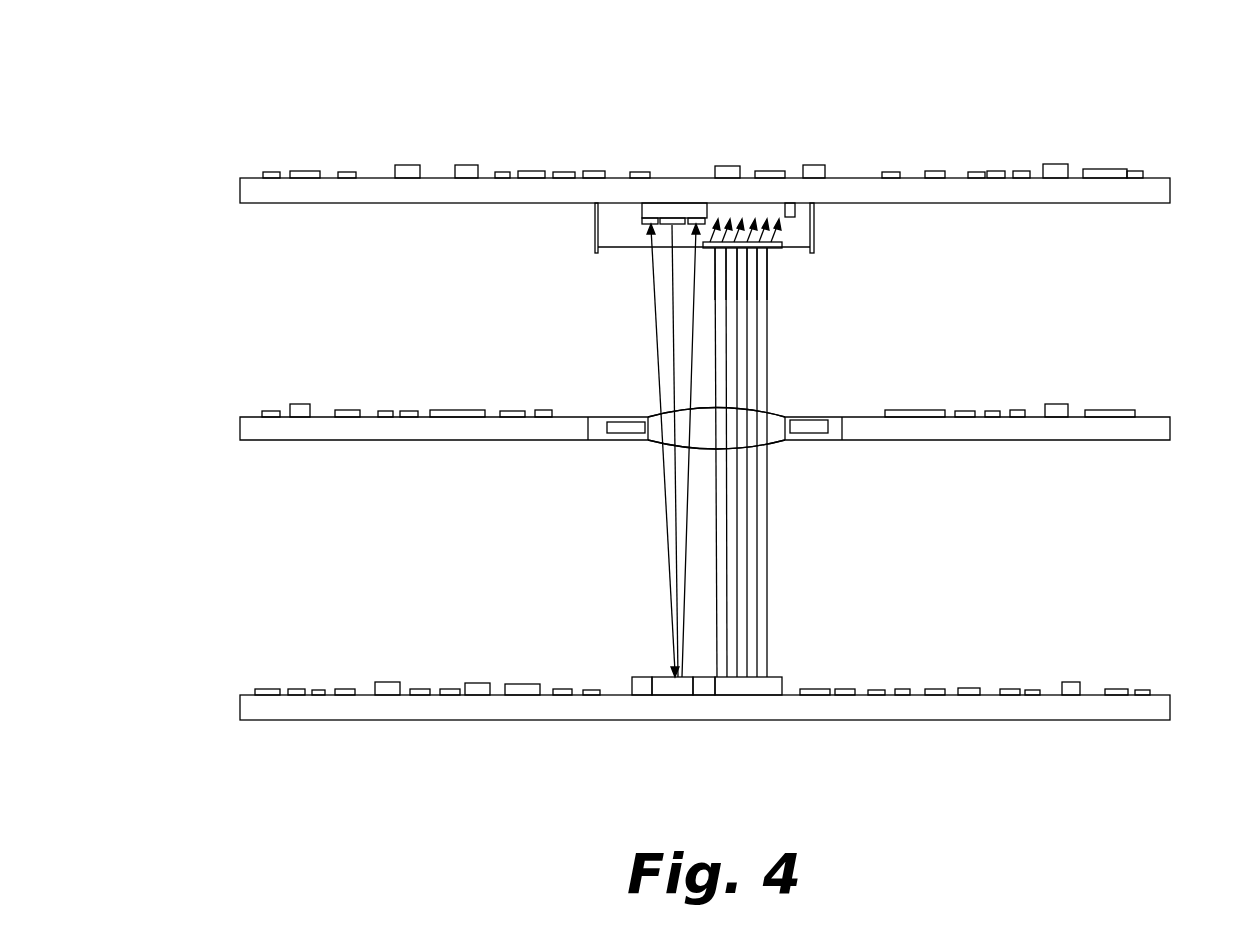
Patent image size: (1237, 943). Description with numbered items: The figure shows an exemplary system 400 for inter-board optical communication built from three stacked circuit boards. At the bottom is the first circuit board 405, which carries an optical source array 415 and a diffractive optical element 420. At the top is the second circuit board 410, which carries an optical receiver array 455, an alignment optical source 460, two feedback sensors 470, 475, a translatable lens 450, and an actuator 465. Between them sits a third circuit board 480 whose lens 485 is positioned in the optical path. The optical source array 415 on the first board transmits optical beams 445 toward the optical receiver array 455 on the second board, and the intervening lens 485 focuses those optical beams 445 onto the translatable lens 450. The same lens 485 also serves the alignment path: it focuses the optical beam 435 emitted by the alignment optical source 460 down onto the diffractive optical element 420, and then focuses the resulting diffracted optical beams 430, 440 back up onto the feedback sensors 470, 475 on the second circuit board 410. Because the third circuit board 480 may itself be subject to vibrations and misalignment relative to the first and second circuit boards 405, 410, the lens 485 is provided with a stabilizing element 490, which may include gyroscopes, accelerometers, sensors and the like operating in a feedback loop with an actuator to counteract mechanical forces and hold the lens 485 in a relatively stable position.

The system for inter-board communication 400 is at (300, 118).
The first circuit board 405 is at (1053, 707).
The second circuit board 410 is at (1053, 188).
The optical source array 415 is at (738, 688).
The diffractive optical element 420 is at (682, 688).
The diffracted optical beam 430 is at (686, 558).
The optical beam 435 is at (677, 515).
The diffracted optical beam 440 is at (667, 483).
The optical beams 445 is at (784, 556).
The translatable lens 450 is at (773, 250).
The optical receiver array 455 is at (778, 210).
The alignment optical source 460 is at (670, 226).
The actuator 465 is at (580, 245).
The sensor 470 is at (636, 228).
The sensor 475 is at (697, 222).
The third circuit board 480 is at (1053, 430).
The lens 485 is at (773, 433).
The stabilizing element 490 is at (800, 425).